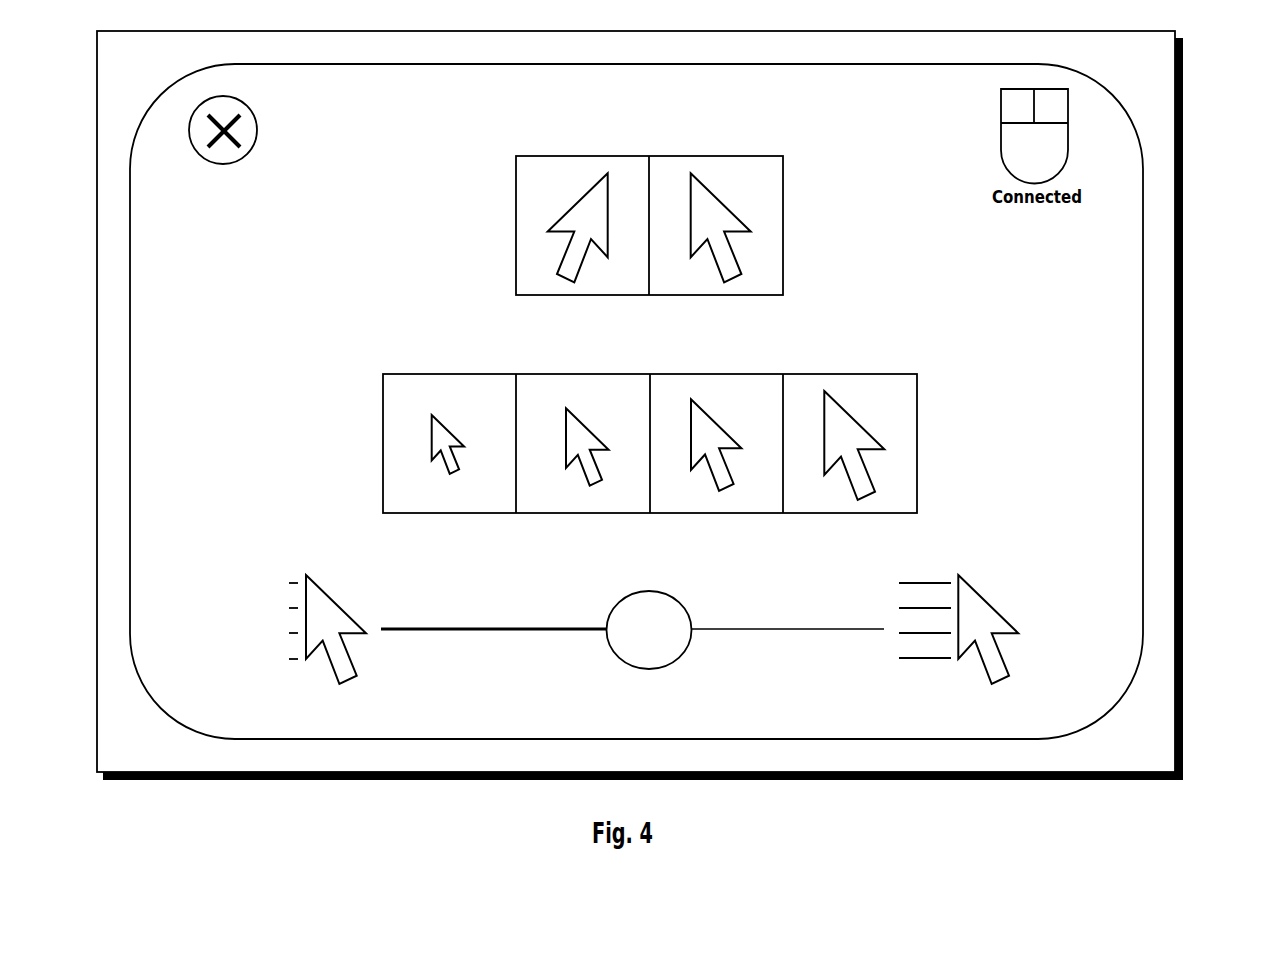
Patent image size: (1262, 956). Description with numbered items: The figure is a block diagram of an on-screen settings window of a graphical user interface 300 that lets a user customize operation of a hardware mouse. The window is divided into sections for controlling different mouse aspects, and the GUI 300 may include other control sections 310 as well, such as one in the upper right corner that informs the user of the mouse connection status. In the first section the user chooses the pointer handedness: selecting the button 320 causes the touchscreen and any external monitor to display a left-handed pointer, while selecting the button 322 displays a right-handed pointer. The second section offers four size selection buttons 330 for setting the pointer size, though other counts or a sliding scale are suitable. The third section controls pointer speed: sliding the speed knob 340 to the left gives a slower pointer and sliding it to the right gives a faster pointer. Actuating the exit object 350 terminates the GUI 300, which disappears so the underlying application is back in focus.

The graphical user interface 300 is at (405, 127).
The control section 310 is at (1127, 257).
The button 320 is at (607, 290).
The button 322 is at (732, 290).
The size selection buttons 330 is at (934, 448).
The speed knob 340 is at (657, 658).
The exit object 350 is at (222, 156).